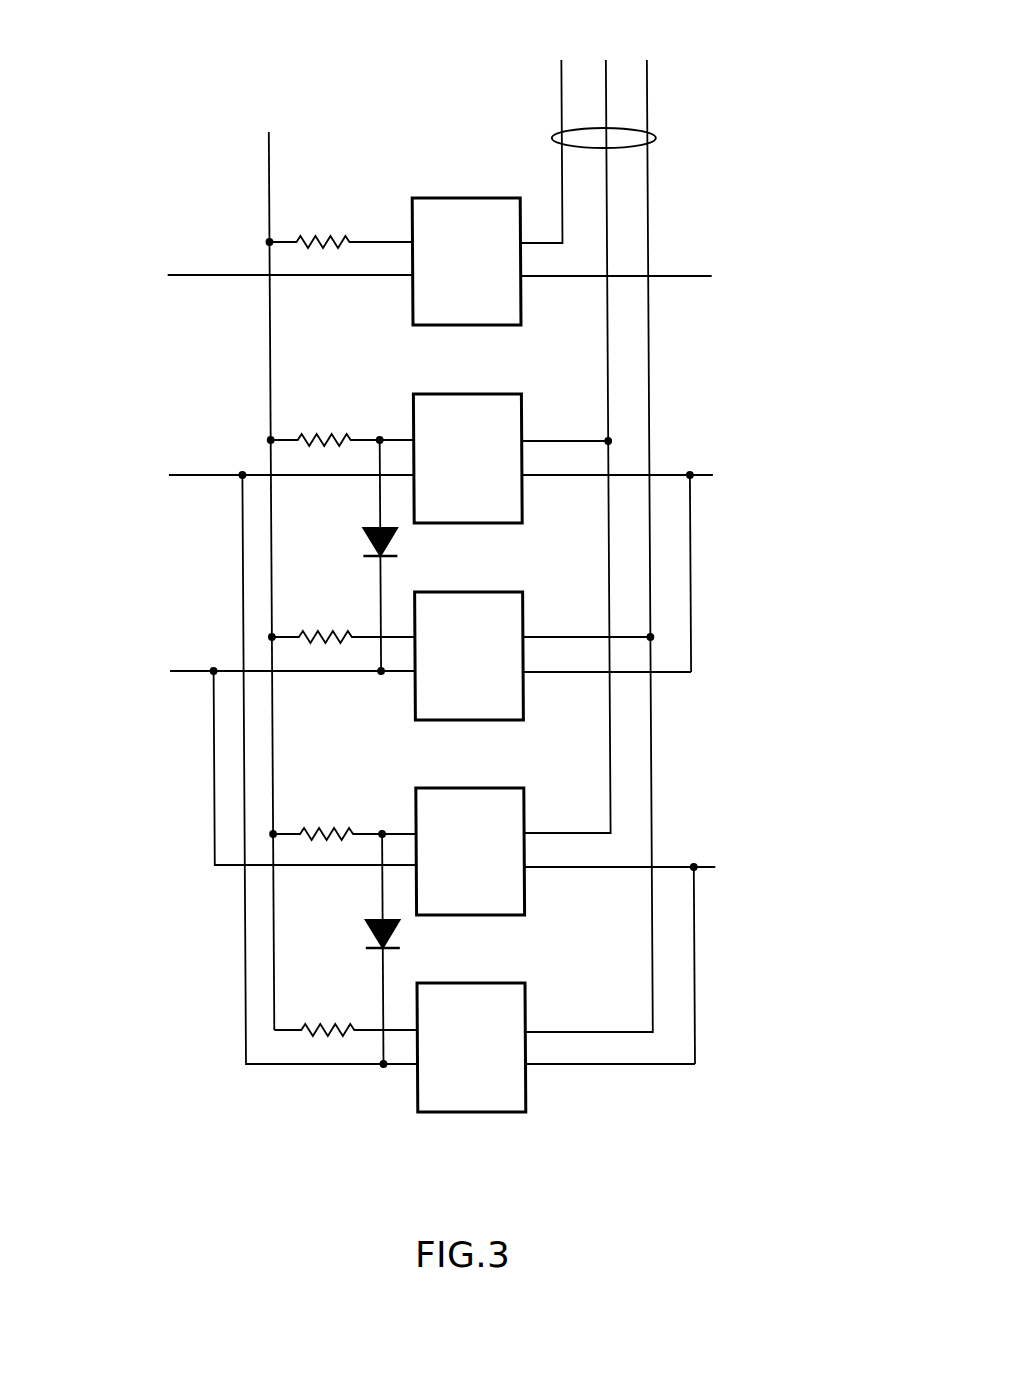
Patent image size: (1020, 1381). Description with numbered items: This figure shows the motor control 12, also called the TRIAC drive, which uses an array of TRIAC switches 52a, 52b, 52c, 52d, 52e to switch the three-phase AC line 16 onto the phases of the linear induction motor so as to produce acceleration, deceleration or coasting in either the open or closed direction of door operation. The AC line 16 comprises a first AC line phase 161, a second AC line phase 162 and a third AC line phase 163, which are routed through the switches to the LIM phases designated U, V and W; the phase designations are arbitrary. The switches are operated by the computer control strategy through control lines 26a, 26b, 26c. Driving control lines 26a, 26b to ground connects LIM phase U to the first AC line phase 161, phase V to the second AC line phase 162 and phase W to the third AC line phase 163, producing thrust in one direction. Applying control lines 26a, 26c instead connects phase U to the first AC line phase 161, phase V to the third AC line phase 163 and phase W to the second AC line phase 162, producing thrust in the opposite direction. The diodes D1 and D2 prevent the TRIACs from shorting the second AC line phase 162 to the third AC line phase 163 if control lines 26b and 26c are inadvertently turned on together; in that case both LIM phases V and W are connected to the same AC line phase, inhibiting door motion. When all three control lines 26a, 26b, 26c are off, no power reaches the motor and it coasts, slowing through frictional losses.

The motor control 12 is at (752, 106).
The AC line 16 is at (655, 136).
The AC line phase 1 161 is at (561, 166).
The AC line phase 2 162 is at (606, 190).
The AC line phase 3 163 is at (648, 231).
The TRIAC switch 52a is at (464, 198).
The TRIAC switch 52b is at (471, 395).
The TRIAC switch 52c is at (476, 592).
The TRIAC switch 52d is at (474, 788).
The TRIAC switch 52e is at (479, 983).
The control line 26a is at (237, 277).
The control line 26b is at (223, 480).
The control line 26c is at (203, 672).
The diode D1 is at (364, 555).
The diode D2 is at (367, 949).